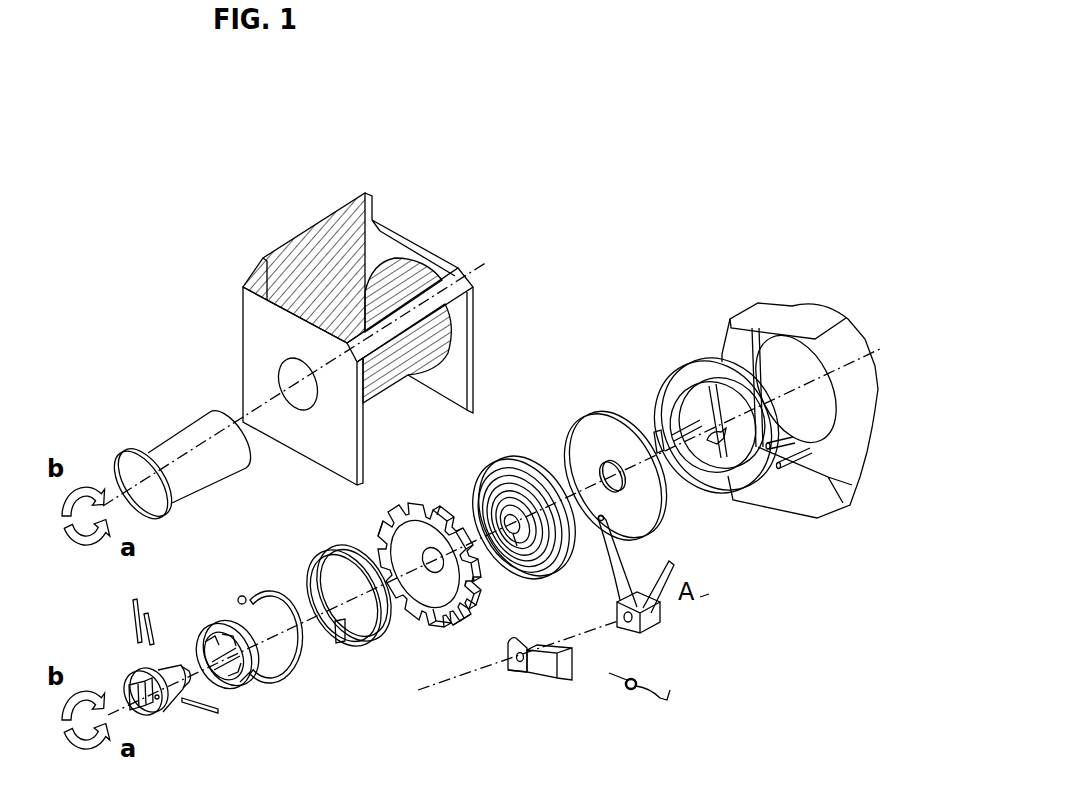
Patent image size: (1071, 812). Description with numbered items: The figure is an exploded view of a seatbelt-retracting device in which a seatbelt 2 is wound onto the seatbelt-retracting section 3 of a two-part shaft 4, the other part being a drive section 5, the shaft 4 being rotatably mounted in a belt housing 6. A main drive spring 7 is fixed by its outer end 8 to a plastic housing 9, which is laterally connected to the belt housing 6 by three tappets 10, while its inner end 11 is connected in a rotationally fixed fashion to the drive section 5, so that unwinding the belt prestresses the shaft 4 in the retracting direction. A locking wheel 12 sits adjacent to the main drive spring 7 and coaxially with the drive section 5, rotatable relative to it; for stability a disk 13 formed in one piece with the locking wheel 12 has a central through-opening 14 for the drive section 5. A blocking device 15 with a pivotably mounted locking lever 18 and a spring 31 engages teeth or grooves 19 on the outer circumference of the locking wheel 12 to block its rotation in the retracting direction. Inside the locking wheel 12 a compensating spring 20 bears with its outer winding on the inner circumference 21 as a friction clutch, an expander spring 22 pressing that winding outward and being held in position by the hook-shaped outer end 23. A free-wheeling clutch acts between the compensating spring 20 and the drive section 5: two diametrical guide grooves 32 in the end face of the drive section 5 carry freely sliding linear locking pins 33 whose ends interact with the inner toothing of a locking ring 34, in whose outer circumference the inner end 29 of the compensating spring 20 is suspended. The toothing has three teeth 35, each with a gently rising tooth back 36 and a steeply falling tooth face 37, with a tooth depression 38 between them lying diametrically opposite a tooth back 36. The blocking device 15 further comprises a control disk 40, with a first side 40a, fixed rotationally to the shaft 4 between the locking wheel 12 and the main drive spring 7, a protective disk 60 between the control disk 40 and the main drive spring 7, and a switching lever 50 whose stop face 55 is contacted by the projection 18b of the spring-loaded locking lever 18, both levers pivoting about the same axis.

The seatbelt 2 is at (283, 247).
The seatbelt-retracting section 3 is at (165, 427).
The shaft 4 is at (204, 488).
The drive section 5 is at (145, 714).
The belt housing 6 is at (428, 246).
The main drive spring 7 is at (716, 416).
The outer end 8 is at (657, 431).
The plastic housing 9 is at (800, 397).
The tappets 10 is at (777, 472).
The inner end 11 is at (711, 450).
The locking wheel 12 is at (428, 564).
The disk 13 is at (398, 552).
The central through-opening 14 is at (424, 548).
The blocking device 15 is at (543, 698).
The locking lever 18 is at (545, 699).
The projection 18b is at (565, 681).
The teeth or grooves 19 is at (469, 619).
The compensating spring 20 is at (354, 616).
The inner circumference 21 is at (410, 598).
The expander spring 22 is at (293, 684).
The outer end 23 is at (375, 594).
The inner end 29 is at (343, 645).
The spring 31 is at (623, 698).
The guide grooves 32 is at (136, 666).
The locking pins 33 is at (207, 721).
The locking ring 34 is at (231, 664).
The teeth 35 is at (199, 625).
The tooth back 36 is at (240, 648).
The tooth face 37 is at (240, 680).
The tooth depression 38 is at (225, 626).
The control disk 40 is at (524, 518).
The first side 40a is at (518, 550).
The switching lever 50 is at (659, 591).
The stop face 55 is at (660, 620).
The disk 60 is at (599, 409).